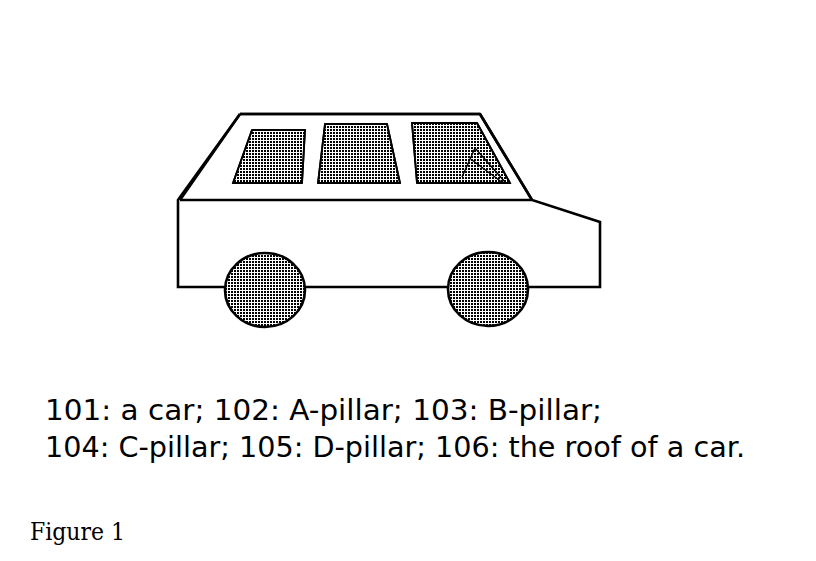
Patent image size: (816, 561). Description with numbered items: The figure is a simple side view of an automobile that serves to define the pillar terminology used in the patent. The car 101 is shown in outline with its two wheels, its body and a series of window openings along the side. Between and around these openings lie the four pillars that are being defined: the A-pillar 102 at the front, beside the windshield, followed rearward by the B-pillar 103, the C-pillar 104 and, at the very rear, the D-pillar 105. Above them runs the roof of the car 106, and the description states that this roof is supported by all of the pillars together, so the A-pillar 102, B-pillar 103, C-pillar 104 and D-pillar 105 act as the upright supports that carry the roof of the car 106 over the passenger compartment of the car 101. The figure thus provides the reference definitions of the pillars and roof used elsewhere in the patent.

The car 101 is at (505, 228).
The A-pillar 102 is at (507, 150).
The B-pillar 103 is at (405, 152).
The C-pillar 104 is at (315, 140).
The D-pillar 105 is at (235, 155).
The roof of a car 106 is at (363, 119).